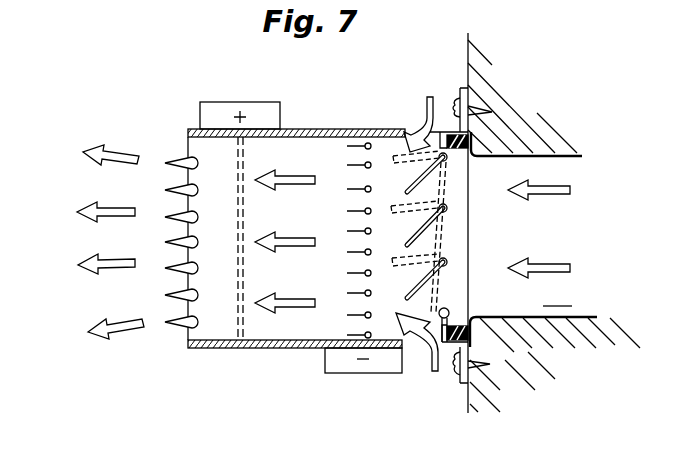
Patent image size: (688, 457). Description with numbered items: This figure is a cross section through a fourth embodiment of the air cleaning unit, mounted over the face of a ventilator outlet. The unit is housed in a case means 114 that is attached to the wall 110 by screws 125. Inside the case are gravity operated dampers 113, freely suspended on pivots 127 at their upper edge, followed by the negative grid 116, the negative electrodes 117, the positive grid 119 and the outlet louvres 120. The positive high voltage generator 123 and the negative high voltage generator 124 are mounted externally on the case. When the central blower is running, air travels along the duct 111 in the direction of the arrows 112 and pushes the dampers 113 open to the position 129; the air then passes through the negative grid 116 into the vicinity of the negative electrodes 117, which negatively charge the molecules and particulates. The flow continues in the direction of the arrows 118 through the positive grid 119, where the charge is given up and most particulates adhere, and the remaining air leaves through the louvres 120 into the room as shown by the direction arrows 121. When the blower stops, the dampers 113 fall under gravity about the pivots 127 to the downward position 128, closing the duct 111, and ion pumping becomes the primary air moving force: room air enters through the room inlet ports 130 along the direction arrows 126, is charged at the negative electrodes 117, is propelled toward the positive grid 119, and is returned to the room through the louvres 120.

The wall 110 is at (535, 352).
The duct 111 is at (559, 295).
The arrows 112 is at (558, 263).
The gravity operated dampers 113 is at (428, 283).
The case means 114 is at (340, 128).
The negative grid 116 is at (370, 323).
The negative electrodes 117 is at (352, 231).
The arrows 118 is at (292, 309).
The positive grid 119 is at (236, 325).
The outlet louvres 120 is at (172, 242).
The direction arrows 121 is at (122, 145).
The positive high voltage generator 123 is at (230, 100).
The negative high voltage generator 124 is at (347, 375).
The screws 125 is at (455, 98).
The direction arrows 126 is at (422, 123).
The pivots 127 is at (468, 138).
The downward position 128 is at (445, 183).
The open position 129 is at (445, 235).
The room inlet ports 130 is at (413, 347).